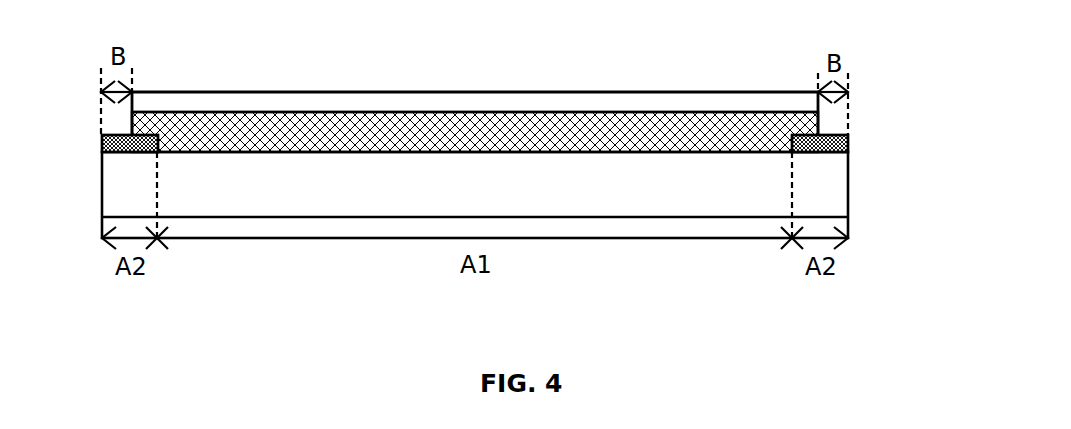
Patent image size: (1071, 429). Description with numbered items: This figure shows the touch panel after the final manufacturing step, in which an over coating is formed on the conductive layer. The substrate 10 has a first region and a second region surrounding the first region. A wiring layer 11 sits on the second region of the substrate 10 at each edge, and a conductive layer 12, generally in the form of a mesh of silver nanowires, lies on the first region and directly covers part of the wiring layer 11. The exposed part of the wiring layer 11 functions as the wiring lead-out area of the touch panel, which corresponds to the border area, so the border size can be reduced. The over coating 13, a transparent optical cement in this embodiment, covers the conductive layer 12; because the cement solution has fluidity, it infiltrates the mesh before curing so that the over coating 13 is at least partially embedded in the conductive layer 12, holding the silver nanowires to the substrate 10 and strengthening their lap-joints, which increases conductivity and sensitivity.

The substrate 10 is at (848, 185).
The wiring layer 11 is at (100, 137).
The conductive layer 12 is at (468, 130).
The over coating 13 is at (362, 103).